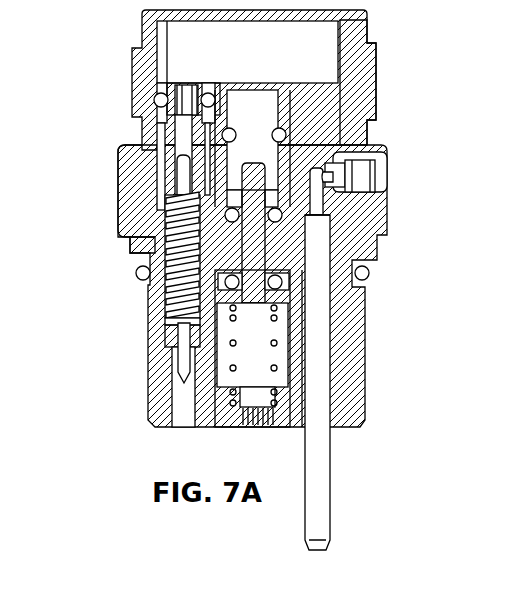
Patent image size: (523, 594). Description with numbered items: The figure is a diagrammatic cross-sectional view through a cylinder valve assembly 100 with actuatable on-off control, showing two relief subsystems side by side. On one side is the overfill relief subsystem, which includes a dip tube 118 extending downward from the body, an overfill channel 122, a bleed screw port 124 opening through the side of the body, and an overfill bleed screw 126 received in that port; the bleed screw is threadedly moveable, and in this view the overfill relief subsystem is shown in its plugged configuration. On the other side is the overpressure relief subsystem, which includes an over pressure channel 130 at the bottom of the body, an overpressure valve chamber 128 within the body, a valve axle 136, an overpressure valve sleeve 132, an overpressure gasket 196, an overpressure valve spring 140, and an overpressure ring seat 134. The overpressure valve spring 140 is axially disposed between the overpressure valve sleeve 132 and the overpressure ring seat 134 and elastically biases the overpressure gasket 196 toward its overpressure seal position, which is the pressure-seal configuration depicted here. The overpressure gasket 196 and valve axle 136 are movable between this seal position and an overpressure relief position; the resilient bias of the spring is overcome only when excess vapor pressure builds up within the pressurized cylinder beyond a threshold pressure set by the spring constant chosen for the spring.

The cylinder valve assembly 100 is at (450, 68).
The dip tube 118 is at (331, 480).
The overfill channel 122 is at (317, 202).
The bleed screw port 124 is at (358, 172).
The overfill bleed screw 126 is at (383, 182).
The overpressure valve chamber 128 is at (167, 293).
The over pressure channel 130 is at (183, 413).
The overpressure valve sleeve 132 is at (165, 330).
The overpressure ring seat 134 is at (143, 117).
The valve axle 136 is at (182, 173).
The overpressure valve spring 140 is at (140, 250).
The overpressure gasket 196 is at (165, 343).